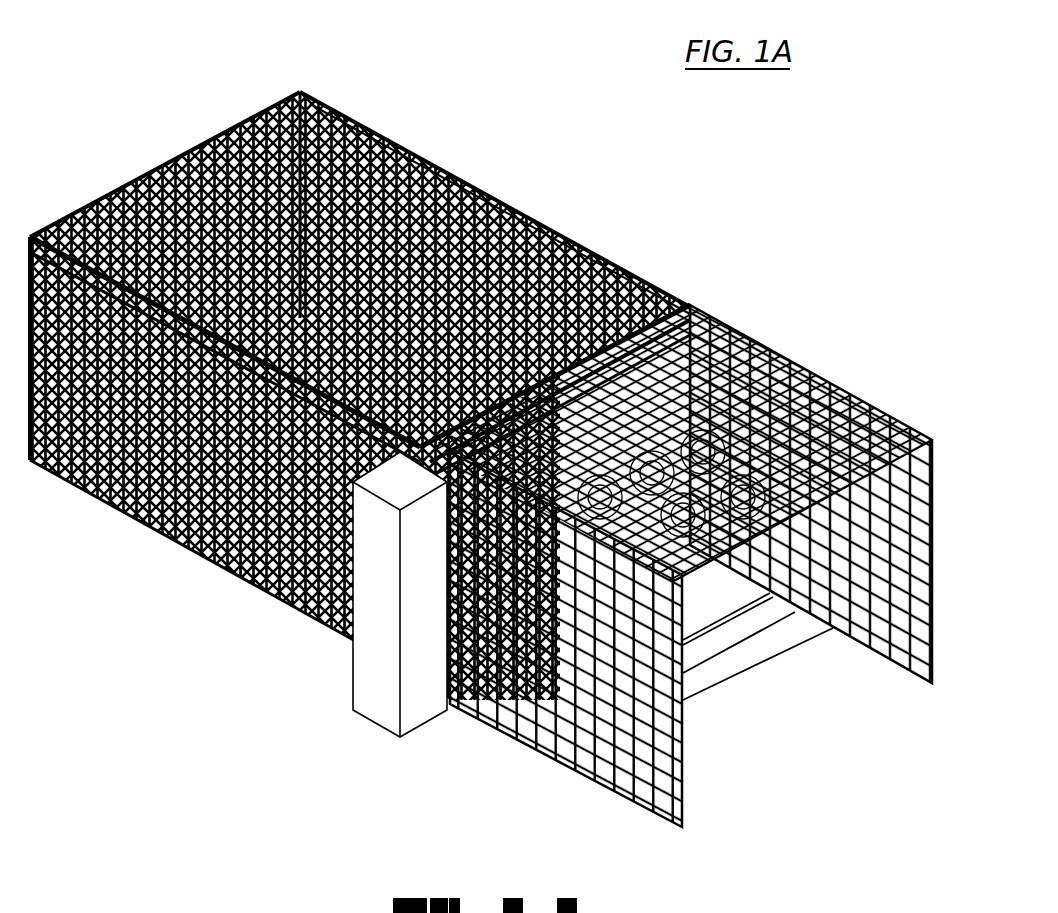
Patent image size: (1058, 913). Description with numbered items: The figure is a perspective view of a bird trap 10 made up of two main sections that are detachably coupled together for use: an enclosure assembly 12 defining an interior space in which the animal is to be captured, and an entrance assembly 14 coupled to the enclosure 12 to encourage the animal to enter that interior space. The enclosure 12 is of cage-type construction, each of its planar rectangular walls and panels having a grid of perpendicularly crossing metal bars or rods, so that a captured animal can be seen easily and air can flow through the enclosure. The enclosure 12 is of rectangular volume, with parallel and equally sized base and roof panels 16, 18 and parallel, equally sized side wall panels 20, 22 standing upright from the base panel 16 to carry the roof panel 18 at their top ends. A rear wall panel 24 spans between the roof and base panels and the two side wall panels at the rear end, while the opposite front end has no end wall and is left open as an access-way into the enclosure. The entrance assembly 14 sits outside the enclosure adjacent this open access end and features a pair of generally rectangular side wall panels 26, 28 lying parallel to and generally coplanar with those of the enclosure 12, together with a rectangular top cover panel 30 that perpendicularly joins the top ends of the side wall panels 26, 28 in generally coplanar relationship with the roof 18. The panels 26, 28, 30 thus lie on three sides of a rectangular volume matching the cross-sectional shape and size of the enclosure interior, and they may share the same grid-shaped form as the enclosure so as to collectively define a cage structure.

The trap 10 is at (480, 429).
The enclosure assembly 12 is at (513, 180).
The entrance assembly 14 is at (813, 355).
The base panel 16 is at (247, 587).
The roof panel 18 is at (527, 217).
The side wall panel 20 is at (103, 505).
The side wall panel 22 is at (590, 252).
The rear wall panel 24 is at (300, 90).
The side wall panel 26 is at (620, 752).
The side wall panel 28 is at (850, 600).
The top cover panel 30 is at (845, 395).